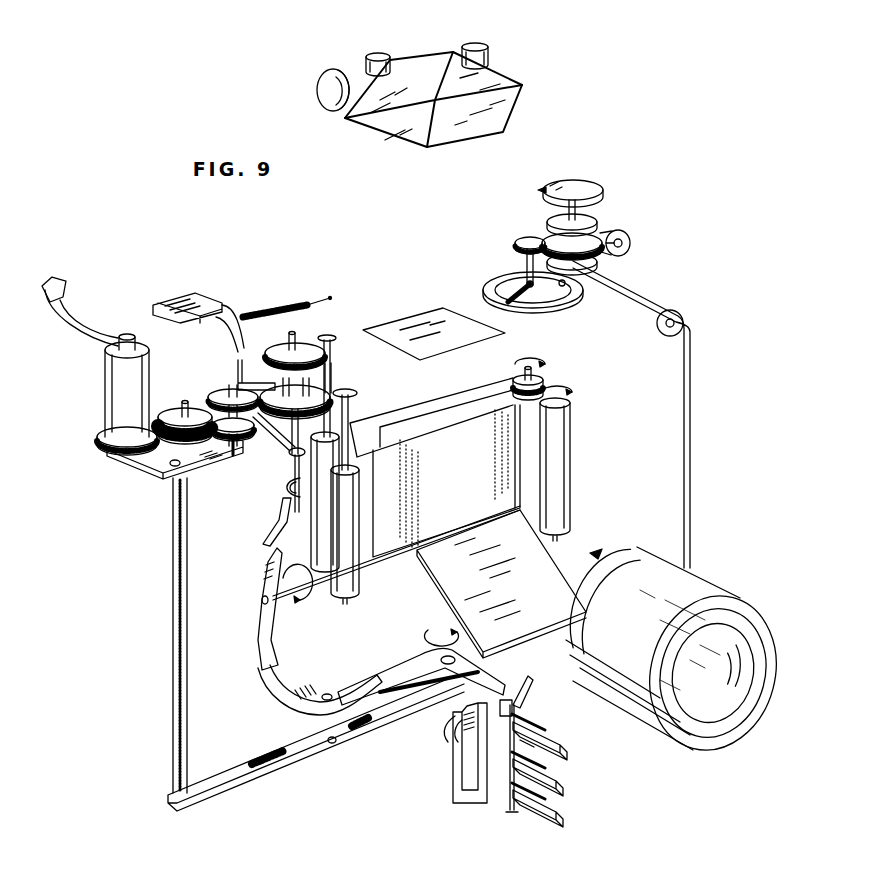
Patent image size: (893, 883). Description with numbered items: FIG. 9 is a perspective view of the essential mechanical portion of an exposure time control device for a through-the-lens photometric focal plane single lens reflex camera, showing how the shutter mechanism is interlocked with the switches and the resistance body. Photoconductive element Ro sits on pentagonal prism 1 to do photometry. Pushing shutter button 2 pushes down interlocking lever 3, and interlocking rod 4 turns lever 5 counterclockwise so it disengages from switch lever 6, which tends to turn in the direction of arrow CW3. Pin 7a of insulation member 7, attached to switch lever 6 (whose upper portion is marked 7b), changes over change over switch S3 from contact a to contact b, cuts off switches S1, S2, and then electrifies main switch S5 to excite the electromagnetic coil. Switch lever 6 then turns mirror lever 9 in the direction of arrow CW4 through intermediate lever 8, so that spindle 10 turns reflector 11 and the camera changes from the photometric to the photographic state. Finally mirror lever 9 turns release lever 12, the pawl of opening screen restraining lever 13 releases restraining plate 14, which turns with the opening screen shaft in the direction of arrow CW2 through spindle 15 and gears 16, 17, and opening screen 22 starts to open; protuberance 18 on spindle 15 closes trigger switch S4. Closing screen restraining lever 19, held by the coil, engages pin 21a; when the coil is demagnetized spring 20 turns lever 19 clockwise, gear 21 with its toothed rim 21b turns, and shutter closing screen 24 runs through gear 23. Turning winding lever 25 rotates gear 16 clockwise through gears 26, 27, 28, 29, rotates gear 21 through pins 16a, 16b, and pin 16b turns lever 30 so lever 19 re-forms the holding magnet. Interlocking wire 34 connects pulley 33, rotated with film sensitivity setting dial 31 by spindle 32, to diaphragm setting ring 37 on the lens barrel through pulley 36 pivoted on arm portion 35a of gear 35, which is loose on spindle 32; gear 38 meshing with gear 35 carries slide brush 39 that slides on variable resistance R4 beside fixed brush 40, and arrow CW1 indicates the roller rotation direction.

The pentagonal prism 1 is at (505, 92).
The photoconductive element Ro is at (470, 45).
The shutter button 2 is at (126, 334).
The interlocking lever 3 is at (160, 470).
The interlocking rod 4 is at (172, 603).
The lever 5 is at (245, 770).
The switch lever 6 is at (422, 668).
The insulation member 7 is at (516, 715).
The pin 7a is at (510, 806).
The rod upper hook 7b is at (512, 700).
The contact a is at (548, 713).
The contact b is at (499, 741).
The intermediate lever 8 is at (300, 705).
The mirror lever 9 is at (262, 655).
The spindle 10 is at (333, 604).
The reflector 11 is at (440, 580).
The release lever 12 is at (268, 525).
The opening screen restraining lever 13 is at (281, 525).
The restraining plate 14 is at (297, 512).
The spindle 15 is at (372, 405).
The gear 16 is at (332, 396).
The pin 16a is at (333, 380).
The pin 16b is at (282, 445).
The gear 17 is at (352, 398).
The protuberance 18 is at (285, 487).
The closing screen restraining lever 19 is at (231, 318).
The spring 20 is at (275, 310).
The gear 21 is at (300, 345).
The pin 21a is at (287, 345).
The gear teeth 21b is at (325, 357).
The opening screen 22 is at (465, 412).
The gear 23 is at (330, 338).
The shutter closing screen 24 is at (432, 410).
The winding lever 25 is at (80, 320).
The gear 26 is at (105, 445).
The gear 27 is at (180, 408).
The gear 28 is at (228, 445).
The gear 29 is at (225, 390).
The lever 30 is at (236, 370).
The film sensitivity setting dial 31 is at (585, 185).
The spindle 32 is at (580, 215).
The pulley 33 is at (598, 222).
The interlocking wire 34 is at (650, 302).
The gear 35 is at (550, 237).
The arm portion 35a is at (605, 260).
The pulley 36 is at (631, 244).
The diaphragm setting ring 37 is at (637, 547).
The gear 38 is at (515, 243).
The slide brush 39 is at (518, 308).
The fixed brush 40 is at (567, 288).
The variable resistance R4 is at (556, 306).
The switch S1 is at (560, 815).
The switch S2 is at (558, 782).
The change over switch S3 is at (553, 740).
The trigger switch S4 is at (242, 462).
The main switch S5 is at (462, 790).
The rotation direction CW1 is at (555, 374).
The arrow CW2 is at (582, 462).
The arrow CW3 is at (438, 626).
The arrow CW4 is at (300, 598).